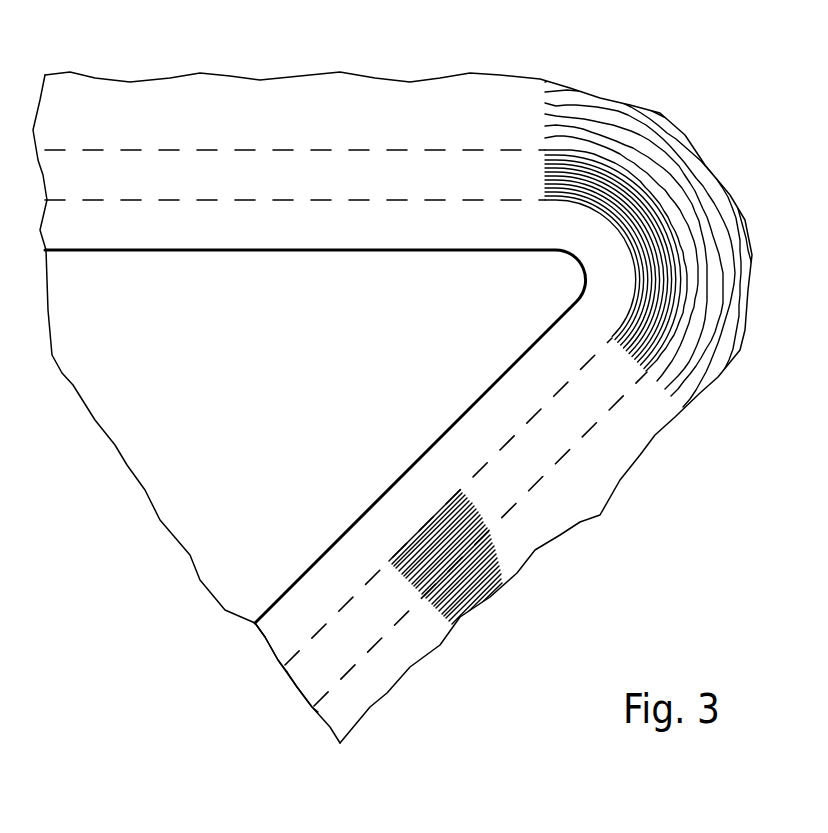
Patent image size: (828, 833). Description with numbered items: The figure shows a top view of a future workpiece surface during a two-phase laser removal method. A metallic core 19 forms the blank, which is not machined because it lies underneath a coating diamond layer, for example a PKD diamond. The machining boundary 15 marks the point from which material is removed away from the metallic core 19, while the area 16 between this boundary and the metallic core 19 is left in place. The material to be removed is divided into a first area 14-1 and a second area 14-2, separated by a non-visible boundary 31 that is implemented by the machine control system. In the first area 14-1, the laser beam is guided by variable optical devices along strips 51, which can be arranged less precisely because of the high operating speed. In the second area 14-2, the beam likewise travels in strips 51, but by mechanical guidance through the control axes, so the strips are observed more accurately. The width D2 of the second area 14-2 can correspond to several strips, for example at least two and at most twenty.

The metallic core 19 is at (185, 443).
The area left in place 16 is at (275, 637).
The machining boundary 15 is at (507, 443).
The non-visible boundary 31 is at (295, 150).
The first area 14-1 is at (333, 720).
The second area 14-2 is at (300, 685).
The strips 51 is at (657, 150).
The width of the second area D2 is at (327, 583).